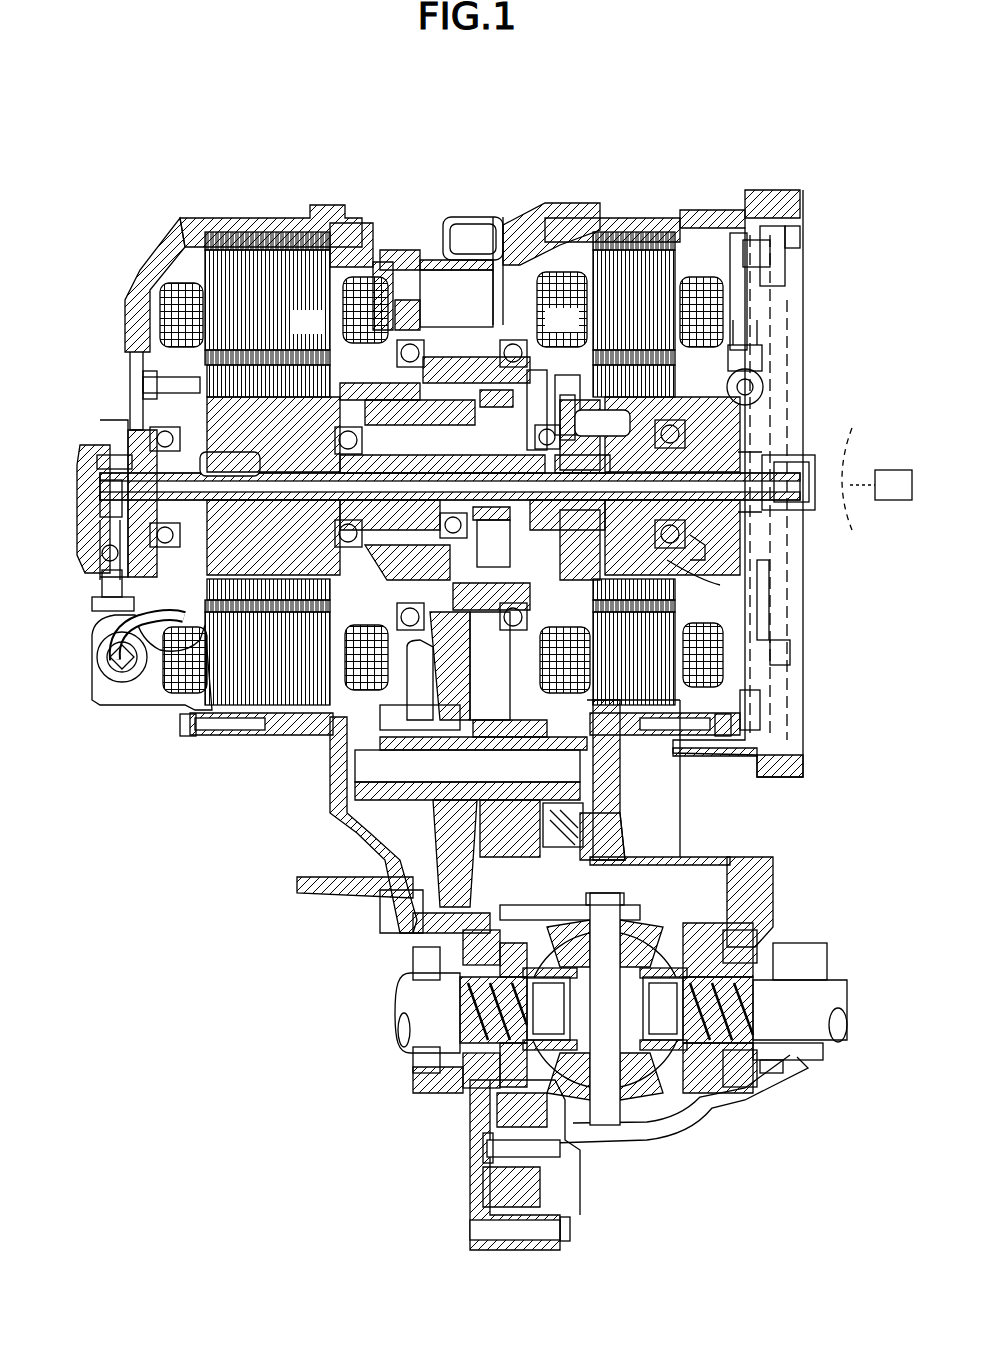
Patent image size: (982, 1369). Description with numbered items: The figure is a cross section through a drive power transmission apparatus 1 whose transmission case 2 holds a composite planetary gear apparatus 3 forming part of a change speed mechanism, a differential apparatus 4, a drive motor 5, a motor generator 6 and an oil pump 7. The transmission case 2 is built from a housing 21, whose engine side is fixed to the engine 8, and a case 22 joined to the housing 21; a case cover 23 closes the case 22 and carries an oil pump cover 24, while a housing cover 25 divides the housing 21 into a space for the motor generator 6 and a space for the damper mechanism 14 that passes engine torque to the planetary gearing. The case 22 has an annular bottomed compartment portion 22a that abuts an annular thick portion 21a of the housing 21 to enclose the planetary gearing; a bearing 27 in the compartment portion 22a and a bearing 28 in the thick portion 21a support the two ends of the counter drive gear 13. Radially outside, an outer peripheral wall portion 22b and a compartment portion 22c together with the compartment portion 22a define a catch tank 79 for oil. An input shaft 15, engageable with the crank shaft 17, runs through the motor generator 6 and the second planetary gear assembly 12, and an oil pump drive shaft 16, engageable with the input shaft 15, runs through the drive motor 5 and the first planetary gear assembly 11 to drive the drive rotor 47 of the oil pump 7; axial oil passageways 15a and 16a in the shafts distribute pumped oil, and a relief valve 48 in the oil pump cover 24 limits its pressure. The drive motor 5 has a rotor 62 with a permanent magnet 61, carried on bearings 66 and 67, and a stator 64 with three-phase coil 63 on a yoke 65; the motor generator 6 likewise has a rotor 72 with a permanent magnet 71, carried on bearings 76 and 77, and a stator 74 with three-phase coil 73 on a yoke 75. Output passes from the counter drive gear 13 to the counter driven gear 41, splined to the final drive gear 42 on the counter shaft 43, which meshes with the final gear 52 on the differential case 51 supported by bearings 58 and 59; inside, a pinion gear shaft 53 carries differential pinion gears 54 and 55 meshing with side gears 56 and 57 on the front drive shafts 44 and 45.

The drive power transmission apparatus 1 is at (655, 118).
The transmission case 2 is at (515, 150).
The composite planetary gear apparatus 3 is at (407, 318).
The differential apparatus 4 is at (710, 878).
The drive motor 5 is at (217, 449).
The motor generator 6 is at (668, 449).
The oil pump 7 is at (100, 422).
The engine 8 is at (893, 500).
The first planetary gear assembly 11 is at (350, 354).
The second planetary gear assembly 12 is at (630, 482).
The counter drive gear 13 is at (478, 648).
The damper mechanism 14 is at (792, 293).
The input shaft 15 is at (782, 408).
The oil passageway 15a is at (603, 448).
The oil pump drive shaft 16 is at (130, 440).
The oil passageway 16a is at (268, 487).
The crank shaft 17 is at (871, 463).
The housing 21 is at (637, 233).
The annular thick portion 21a is at (508, 333).
The case 22 is at (322, 216).
The annular bottomed compartment portion 22a is at (440, 252).
The outer peripheral wall portion 22b is at (477, 258).
The compartment portion 22c is at (500, 230).
The case cover 23 is at (155, 290).
The oil pump cover 24 is at (77, 505).
The housing cover 25 is at (716, 205).
The bearing 27 is at (425, 640).
The bearing 28 is at (512, 640).
The counter driven gear 41 is at (400, 850).
The final drive gear 42 is at (567, 817).
The counter shaft 43 is at (347, 768).
The front drive shaft 44 is at (400, 980).
The front drive shaft 45 is at (843, 988).
The drive rotor 47 is at (110, 462).
The relief valve 48 is at (97, 550).
The differential case 51 is at (650, 915).
The final gear 52 is at (545, 1190).
The pinion gear shaft 53 is at (590, 905).
The differential pinion gear 54 is at (627, 912).
The differential pinion gear 55 is at (657, 1107).
The side gear 56 is at (675, 950).
The side gear 57 is at (490, 1107).
The bearing 58 is at (425, 935).
The bearing 59 is at (750, 932).
The permanent magnet 61 is at (207, 362).
The rotor 62 is at (215, 398).
The three-phase coil 63 is at (160, 318).
The stator 64 is at (226, 236).
The yoke 65 is at (268, 285).
The bearing 66 is at (150, 565).
The bearing 67 is at (215, 600).
The permanent magnet 71 is at (705, 355).
The rotor 72 is at (695, 368).
The three-phase coil 73 is at (515, 300).
The stator 74 is at (660, 252).
The yoke 75 is at (610, 275).
The bearing 76 is at (690, 547).
The bearing 77 is at (667, 573).
The catch tank 79 is at (430, 287).